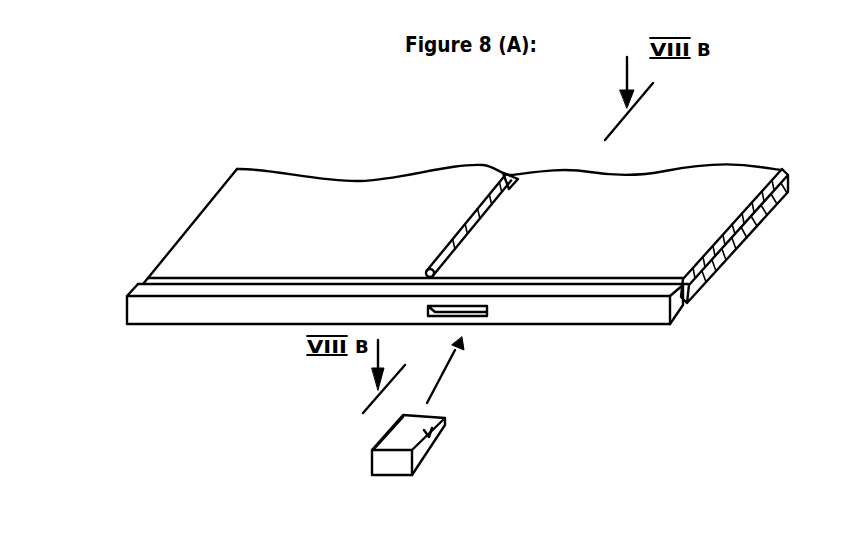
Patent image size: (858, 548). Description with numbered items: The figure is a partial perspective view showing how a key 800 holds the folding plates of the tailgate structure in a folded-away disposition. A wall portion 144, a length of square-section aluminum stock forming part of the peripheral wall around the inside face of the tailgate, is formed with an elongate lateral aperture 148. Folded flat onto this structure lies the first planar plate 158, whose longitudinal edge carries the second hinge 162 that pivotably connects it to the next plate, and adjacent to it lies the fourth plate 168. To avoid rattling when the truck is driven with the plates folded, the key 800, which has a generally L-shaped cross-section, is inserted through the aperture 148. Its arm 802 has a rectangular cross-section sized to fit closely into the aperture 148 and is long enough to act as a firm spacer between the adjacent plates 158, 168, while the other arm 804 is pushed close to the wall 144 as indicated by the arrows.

The wall portion 144 is at (155, 290).
The lateral aperture 148 is at (482, 320).
The first planar plate 158 is at (707, 192).
The second hinge 162 is at (503, 172).
The fourth plate 168 is at (722, 277).
The key 800 is at (342, 464).
The arm 802 is at (430, 433).
The other arm 804 is at (387, 442).